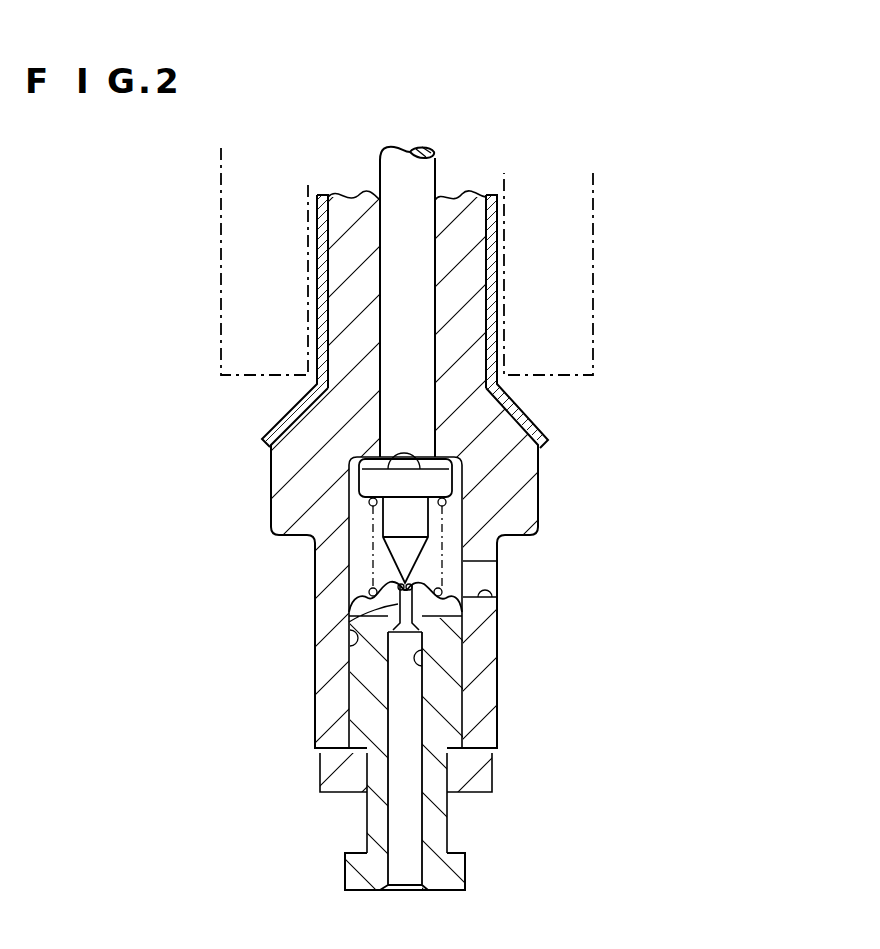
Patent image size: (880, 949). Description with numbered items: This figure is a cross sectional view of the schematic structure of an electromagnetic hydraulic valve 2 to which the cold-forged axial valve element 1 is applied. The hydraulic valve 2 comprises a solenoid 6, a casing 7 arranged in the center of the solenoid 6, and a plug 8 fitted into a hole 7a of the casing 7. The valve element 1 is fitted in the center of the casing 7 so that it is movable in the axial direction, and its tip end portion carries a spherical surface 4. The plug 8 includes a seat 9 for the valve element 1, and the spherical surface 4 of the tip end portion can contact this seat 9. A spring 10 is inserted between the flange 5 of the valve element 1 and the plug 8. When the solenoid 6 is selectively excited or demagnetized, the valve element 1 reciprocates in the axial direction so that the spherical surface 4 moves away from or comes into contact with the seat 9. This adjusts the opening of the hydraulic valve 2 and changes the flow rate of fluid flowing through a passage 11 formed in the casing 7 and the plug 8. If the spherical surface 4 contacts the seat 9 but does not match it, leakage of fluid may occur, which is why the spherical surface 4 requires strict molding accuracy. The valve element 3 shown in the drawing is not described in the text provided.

The valve element 1 is at (418, 175).
The electromagnetic hydraulic valve 2 is at (603, 204).
The valve needle 3 is at (383, 557).
The spherical surface 4 is at (398, 592).
The flange 5 is at (360, 477).
The solenoid 6 is at (596, 290).
The casing 7 is at (520, 467).
The hole 7a is at (350, 650).
The plug 8 is at (355, 692).
The seat 9 is at (432, 575).
The spring 10 is at (445, 503).
The passage 11 is at (423, 667).